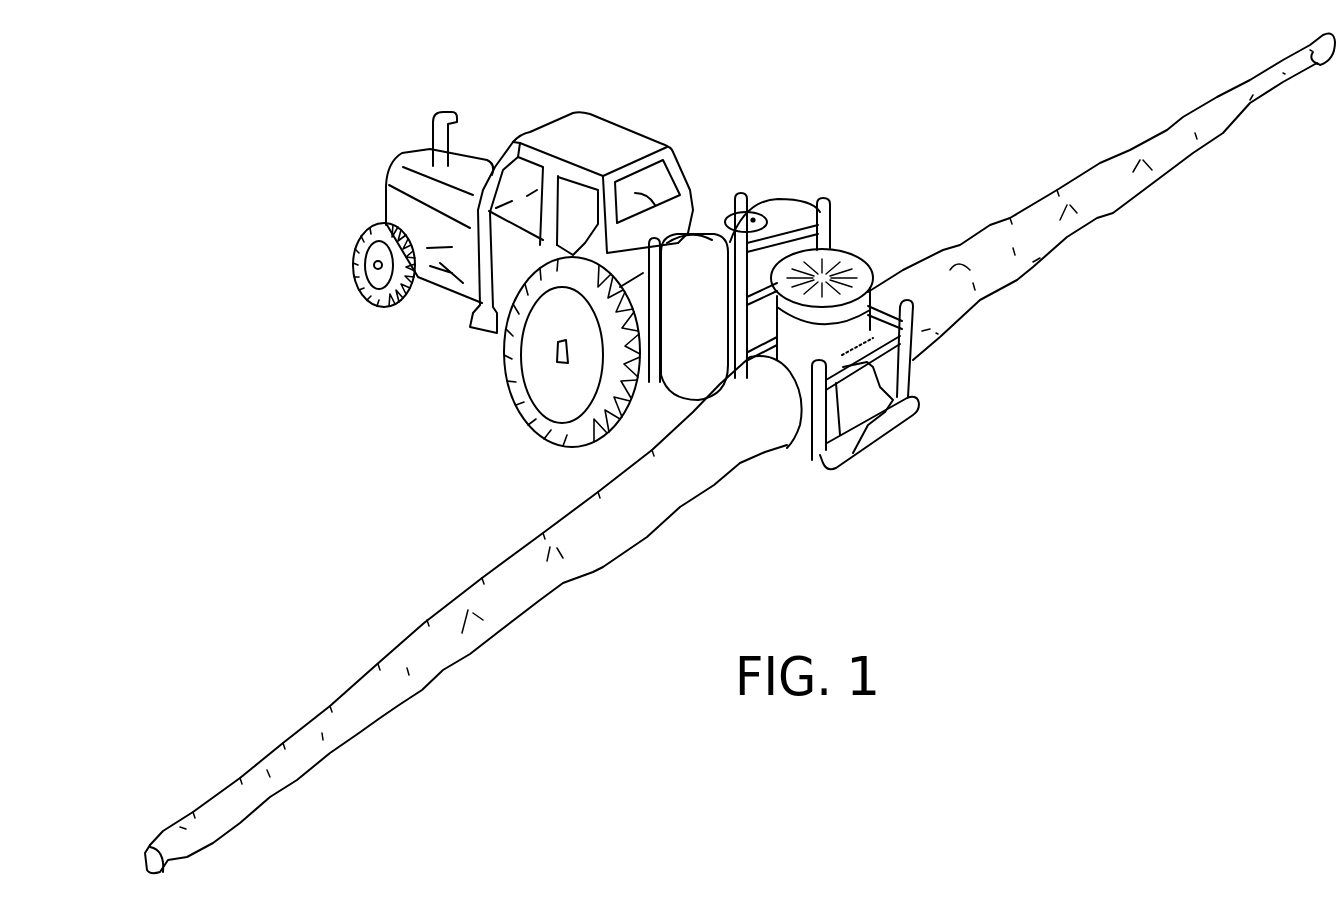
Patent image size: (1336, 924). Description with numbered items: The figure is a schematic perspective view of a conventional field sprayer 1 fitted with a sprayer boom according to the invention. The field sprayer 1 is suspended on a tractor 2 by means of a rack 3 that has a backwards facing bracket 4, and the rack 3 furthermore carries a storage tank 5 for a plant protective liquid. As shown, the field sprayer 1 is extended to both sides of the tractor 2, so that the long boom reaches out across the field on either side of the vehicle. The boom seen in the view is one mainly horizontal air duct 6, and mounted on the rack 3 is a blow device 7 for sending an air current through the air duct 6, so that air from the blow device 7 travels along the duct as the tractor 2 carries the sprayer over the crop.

The field sprayer 1 is at (740, 454).
The tractor 2 is at (607, 114).
The rack 3 is at (837, 223).
The backwards facing bracket 4 is at (907, 410).
The storage tank 5 is at (783, 210).
The air duct 6 is at (630, 512).
The blow device 7 is at (893, 283).